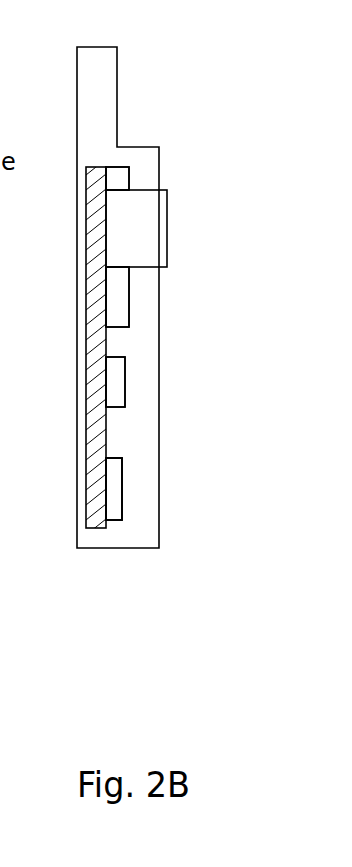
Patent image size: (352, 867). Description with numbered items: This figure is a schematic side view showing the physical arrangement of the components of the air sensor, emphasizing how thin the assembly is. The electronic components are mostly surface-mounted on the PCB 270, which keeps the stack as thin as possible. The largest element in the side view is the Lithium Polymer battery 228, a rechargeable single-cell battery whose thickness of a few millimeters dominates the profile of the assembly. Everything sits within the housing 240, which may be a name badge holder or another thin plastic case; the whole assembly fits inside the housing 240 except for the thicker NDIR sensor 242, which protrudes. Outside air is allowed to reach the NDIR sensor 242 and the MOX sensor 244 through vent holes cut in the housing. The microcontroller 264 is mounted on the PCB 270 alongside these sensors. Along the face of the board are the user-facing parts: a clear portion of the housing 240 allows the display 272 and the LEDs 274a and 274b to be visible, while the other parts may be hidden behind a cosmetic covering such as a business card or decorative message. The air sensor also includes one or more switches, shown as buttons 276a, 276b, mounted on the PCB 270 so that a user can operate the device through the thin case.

The housing 240 is at (77, 83).
The PCB 270 is at (100, 528).
The Lithium Polymer battery 228 is at (167, 235).
The microcontroller 264 is at (130, 297).
The NDIR sensor 242 is at (117, 297).
The MOX sensor 244 is at (117, 178).
The LED 274a is at (125, 388).
The LED 274b is at (115, 382).
The button 276a is at (115, 520).
The button 276b is at (114, 489).
The display 272 is at (114, 489).